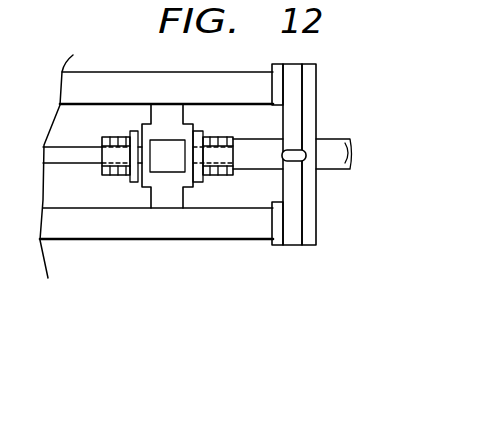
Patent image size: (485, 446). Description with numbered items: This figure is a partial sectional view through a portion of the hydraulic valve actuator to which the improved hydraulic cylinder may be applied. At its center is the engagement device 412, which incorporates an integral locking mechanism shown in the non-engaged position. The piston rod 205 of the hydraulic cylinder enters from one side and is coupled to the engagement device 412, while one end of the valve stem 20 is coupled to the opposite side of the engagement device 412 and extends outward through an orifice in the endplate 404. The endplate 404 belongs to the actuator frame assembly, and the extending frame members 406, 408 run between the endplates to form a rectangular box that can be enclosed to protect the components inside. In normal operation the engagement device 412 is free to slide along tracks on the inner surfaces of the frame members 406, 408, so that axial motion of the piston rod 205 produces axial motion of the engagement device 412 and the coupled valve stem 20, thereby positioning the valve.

The valve stem 20 is at (331, 138).
The piston rod 205 is at (90, 160).
The endplate 404 is at (310, 215).
The frame member 406 is at (127, 78).
The frame member 408 is at (237, 230).
The engagement device 412 is at (168, 200).